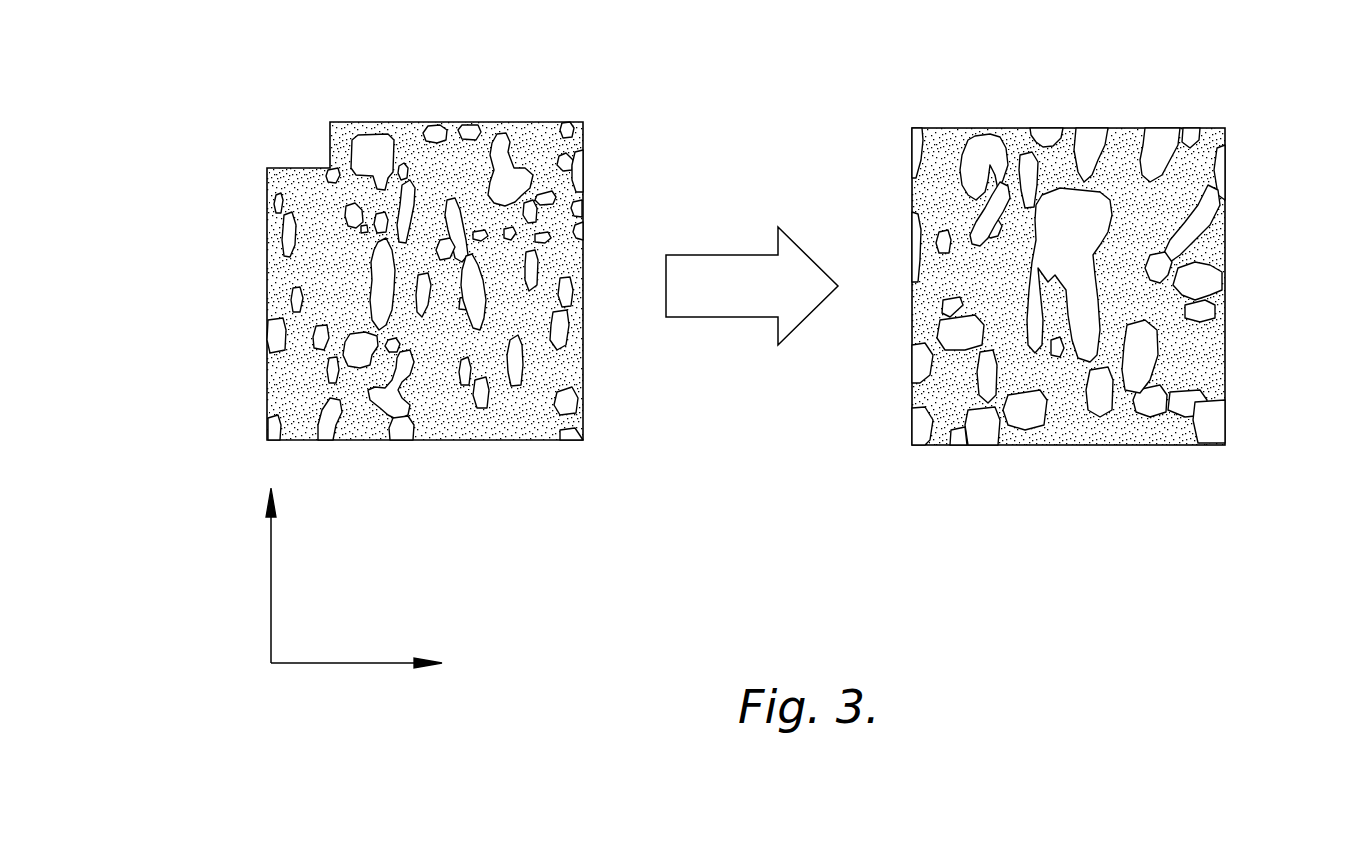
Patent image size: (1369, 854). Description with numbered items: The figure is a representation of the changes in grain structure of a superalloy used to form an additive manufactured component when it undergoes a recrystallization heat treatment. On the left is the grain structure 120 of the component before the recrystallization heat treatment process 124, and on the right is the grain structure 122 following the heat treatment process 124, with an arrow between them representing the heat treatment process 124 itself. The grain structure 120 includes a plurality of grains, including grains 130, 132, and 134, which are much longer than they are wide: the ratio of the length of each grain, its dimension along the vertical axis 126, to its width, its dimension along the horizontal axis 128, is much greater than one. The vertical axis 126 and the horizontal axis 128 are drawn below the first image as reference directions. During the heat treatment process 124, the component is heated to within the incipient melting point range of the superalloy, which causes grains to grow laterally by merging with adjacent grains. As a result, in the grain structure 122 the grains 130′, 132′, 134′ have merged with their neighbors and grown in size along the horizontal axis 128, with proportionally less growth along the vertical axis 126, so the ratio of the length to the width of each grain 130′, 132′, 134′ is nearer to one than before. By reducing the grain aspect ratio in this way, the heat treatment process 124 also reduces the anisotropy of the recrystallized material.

The grain structure 120 is at (398, 122).
The grain structure 122 is at (1012, 128).
The recrystallization heat treatment process 124 is at (723, 255).
The vertical axis 126 is at (271, 578).
The horizontal axis 128 is at (368, 663).
The grain 130 is at (384, 264).
The grain 132 is at (512, 362).
The grain 134 is at (472, 272).
The grain 130′ is at (1008, 243).
The grain 132′ is at (1150, 360).
The grain 134′ is at (1080, 290).